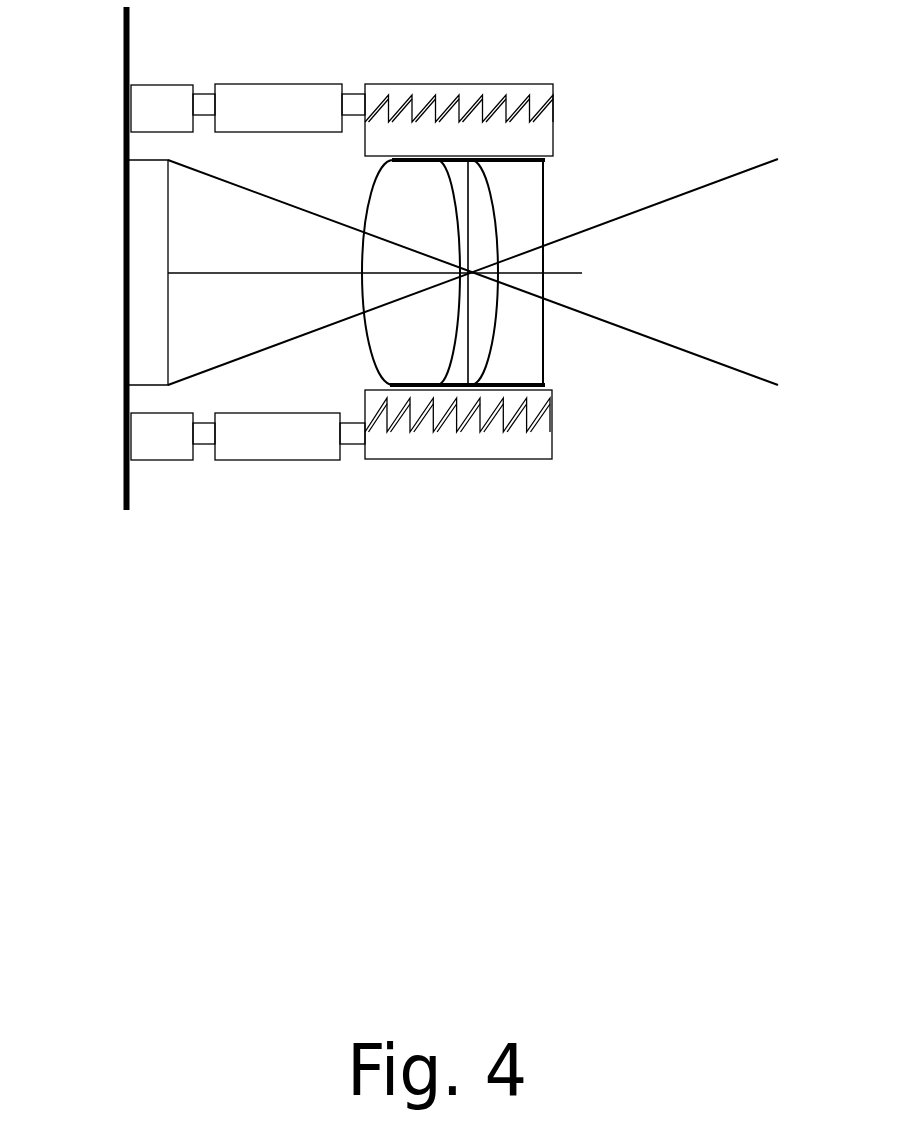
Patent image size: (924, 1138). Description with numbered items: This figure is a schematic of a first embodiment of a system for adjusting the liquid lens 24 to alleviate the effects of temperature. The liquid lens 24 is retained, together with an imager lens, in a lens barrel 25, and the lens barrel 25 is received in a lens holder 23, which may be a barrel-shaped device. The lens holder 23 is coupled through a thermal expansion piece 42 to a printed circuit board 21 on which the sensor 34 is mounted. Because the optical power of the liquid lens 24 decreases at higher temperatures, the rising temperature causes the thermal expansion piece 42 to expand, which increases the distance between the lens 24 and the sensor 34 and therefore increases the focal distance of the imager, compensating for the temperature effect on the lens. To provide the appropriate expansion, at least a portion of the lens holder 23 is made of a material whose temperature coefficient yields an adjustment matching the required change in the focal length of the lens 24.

The printed circuit board 21 is at (123, 47).
The lens holder 23 is at (500, 459).
The liquid lens 24 is at (523, 216).
The lens barrel 25 is at (552, 390).
The sensor 34 is at (155, 160).
The thermal expansion piece 42 is at (275, 460).